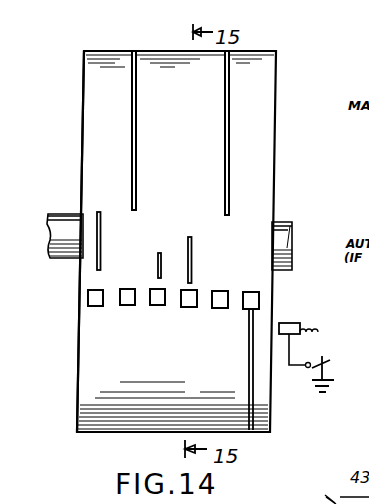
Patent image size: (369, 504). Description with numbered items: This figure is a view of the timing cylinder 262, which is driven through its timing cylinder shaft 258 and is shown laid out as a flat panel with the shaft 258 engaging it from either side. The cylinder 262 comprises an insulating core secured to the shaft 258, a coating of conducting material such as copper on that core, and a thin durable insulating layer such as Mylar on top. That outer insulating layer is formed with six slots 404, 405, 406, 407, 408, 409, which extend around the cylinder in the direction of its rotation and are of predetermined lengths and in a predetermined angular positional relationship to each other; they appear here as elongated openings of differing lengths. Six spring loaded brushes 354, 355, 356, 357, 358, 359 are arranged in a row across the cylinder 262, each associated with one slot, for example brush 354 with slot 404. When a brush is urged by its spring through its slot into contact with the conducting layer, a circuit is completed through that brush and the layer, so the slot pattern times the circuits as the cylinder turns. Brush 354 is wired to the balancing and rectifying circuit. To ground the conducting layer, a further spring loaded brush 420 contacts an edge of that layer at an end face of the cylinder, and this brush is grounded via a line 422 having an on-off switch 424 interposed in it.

The timing cylinder 262 is at (80, 60).
The timing cylinder shaft 258 is at (61, 218).
The slot 408 is at (137, 152).
The slot 405 is at (230, 200).
The slot 409 is at (101, 238).
The slot 407 is at (157, 265).
The slot 406 is at (192, 250).
The spring loaded brush 359 is at (95, 306).
The spring loaded brush 358 is at (128, 305).
The spring loaded brush 357 is at (158, 305).
The spring loaded brush 356 is at (189, 307).
The spring loaded brush 355 is at (217, 290).
The spring loaded brush 354 is at (250, 291).
The slot 404 is at (251, 340).
The spring loaded brush 420 is at (287, 323).
The line 422 is at (291, 346).
The on-off switch 424 is at (327, 368).